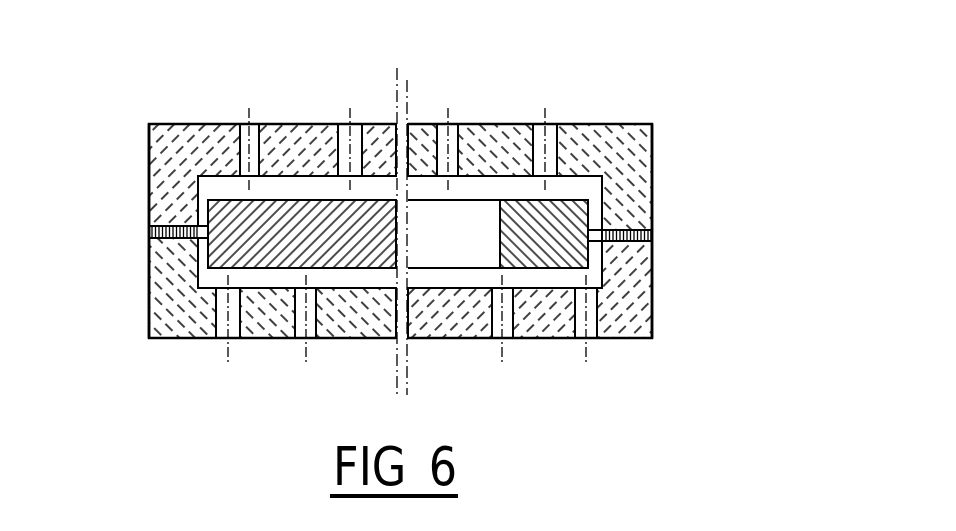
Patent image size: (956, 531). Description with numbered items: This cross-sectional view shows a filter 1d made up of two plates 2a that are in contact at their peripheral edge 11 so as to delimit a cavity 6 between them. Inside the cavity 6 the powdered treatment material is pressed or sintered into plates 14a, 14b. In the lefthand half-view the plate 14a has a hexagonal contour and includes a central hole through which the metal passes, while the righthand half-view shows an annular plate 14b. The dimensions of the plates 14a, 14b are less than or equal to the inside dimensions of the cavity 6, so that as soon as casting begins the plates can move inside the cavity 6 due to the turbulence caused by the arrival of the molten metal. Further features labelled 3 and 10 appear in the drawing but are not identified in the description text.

The filter 1d is at (632, 117).
The plate 2a is at (147, 153).
The screw 3 is at (240, 127).
The cavity 6 is at (302, 177).
The threaded bore 10 is at (150, 232).
The peripheral edge 11 is at (172, 212).
The plate 14a is at (283, 268).
The plate 14b is at (524, 220).